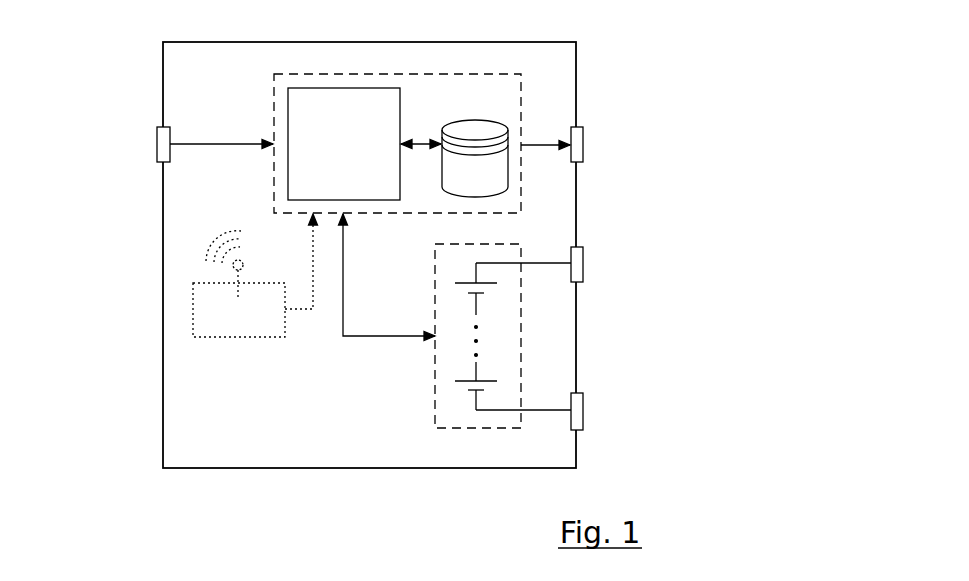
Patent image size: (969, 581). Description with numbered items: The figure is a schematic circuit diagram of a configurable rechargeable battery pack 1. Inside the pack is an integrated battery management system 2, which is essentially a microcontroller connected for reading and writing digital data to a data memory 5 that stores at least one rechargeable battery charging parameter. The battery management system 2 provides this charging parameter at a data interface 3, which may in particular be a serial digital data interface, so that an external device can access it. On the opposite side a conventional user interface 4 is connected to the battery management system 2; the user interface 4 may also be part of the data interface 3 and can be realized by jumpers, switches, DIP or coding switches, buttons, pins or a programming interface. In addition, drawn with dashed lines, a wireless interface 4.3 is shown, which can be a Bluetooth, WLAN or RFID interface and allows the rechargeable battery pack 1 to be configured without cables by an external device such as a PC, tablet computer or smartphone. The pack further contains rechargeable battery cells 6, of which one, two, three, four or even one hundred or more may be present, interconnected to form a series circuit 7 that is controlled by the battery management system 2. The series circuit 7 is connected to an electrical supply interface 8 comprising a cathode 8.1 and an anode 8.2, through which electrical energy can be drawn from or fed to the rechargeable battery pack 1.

The rechargeable battery pack 1 is at (697, 50).
The battery management system 2 is at (274, 110).
The data interface 3 is at (600, 126).
The user interface 4 is at (193, 244).
The wireless interface 4.3 is at (228, 327).
The data memory 5 is at (467, 192).
The rechargeable battery cells 6 is at (500, 290).
The series circuit 7 is at (475, 342).
The electrical supply interface 8 is at (535, 325).
The cathode 8.1 is at (583, 402).
The anode 8.2 is at (583, 254).